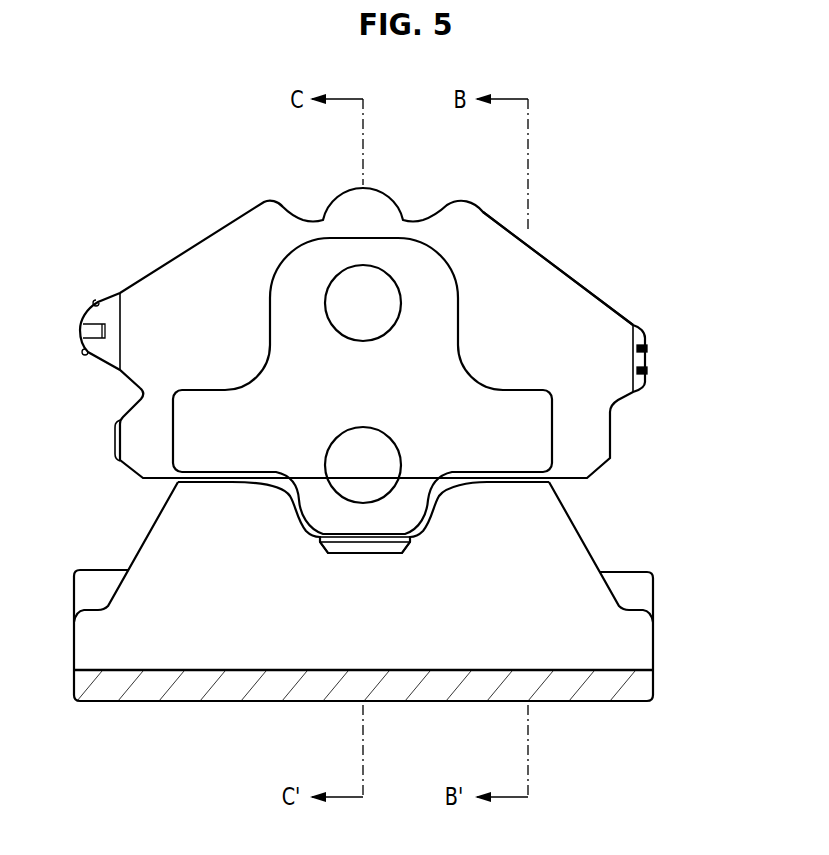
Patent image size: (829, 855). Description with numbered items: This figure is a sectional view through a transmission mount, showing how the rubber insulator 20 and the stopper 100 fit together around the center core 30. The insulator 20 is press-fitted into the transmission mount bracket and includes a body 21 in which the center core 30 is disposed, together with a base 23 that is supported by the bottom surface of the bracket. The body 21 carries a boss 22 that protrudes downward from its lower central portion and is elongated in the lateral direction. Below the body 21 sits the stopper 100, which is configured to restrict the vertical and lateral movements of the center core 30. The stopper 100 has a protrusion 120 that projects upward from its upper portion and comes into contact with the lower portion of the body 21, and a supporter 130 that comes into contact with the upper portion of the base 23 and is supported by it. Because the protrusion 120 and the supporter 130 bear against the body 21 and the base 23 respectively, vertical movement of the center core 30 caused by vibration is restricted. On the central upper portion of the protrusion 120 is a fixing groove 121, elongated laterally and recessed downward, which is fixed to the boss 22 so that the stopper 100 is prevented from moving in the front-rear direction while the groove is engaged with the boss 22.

The insulator 20 is at (557, 259).
The body 21 is at (568, 312).
The boss 22 is at (385, 545).
The base 23 is at (610, 698).
The center core 30 is at (264, 276).
The stopper 100 is at (600, 552).
The protrusion 120 is at (167, 527).
The fixing groove 121 is at (348, 546).
The supporter 130 is at (635, 642).